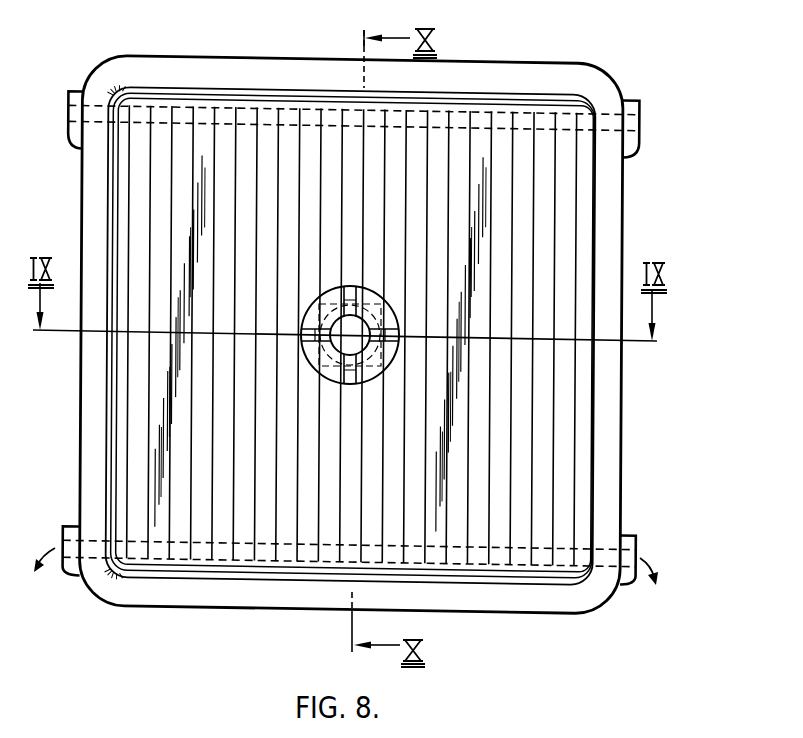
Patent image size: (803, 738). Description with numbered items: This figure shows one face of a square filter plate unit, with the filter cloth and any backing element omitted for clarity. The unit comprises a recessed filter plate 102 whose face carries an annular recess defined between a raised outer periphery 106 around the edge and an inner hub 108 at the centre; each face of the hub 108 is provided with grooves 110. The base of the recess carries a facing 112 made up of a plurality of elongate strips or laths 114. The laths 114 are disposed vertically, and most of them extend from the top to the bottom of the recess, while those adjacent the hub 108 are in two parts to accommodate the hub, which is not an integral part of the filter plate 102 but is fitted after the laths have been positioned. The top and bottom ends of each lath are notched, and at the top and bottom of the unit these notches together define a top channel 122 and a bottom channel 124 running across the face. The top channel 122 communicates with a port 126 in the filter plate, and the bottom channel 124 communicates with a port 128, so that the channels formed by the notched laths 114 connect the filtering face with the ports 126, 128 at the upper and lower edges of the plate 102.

The filter plate 102 is at (82, 436).
The raised outer periphery 106 is at (159, 588).
The inner hub 108 is at (393, 358).
The grooves 110 is at (383, 375).
The facing 112 is at (577, 205).
The laths 114 is at (563, 557).
The top channel 122 is at (543, 125).
The bottom channel 124 is at (263, 548).
The port 126 is at (82, 93).
The port 128 is at (72, 528).